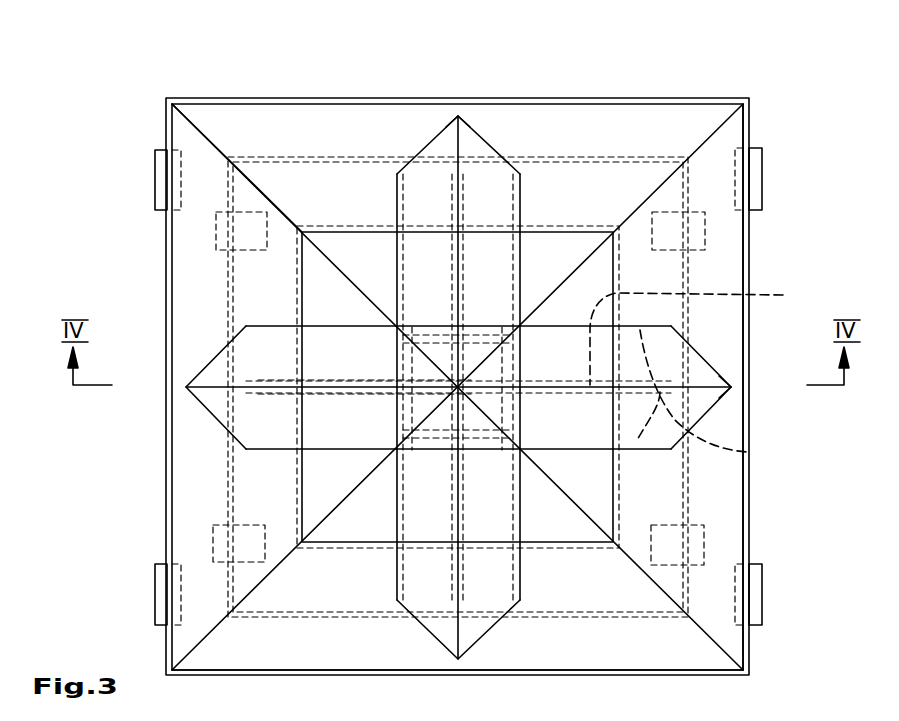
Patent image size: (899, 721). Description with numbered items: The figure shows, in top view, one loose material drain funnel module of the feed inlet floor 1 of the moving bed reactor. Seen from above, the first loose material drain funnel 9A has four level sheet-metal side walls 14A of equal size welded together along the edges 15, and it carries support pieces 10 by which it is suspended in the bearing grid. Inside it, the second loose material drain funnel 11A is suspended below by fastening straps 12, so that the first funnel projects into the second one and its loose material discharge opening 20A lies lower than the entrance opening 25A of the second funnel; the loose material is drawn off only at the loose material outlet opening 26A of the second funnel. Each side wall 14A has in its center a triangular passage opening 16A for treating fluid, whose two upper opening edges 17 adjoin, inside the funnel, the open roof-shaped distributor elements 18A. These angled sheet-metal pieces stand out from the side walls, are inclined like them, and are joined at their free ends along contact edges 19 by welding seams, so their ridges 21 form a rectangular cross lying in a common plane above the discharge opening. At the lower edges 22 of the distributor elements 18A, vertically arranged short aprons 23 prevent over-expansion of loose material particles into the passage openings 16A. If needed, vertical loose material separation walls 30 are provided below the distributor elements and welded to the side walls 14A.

The feed inlet floor 1 is at (838, 720).
The first loose material drain funnel 9A is at (749, 237).
The support pieces 10 is at (160, 193).
The second loose material drain funnel 11A is at (643, 157).
The fastening straps 12 is at (697, 233).
The side wall 14A is at (197, 165).
The edges 15 is at (723, 128).
The triangular passage opening 16A is at (473, 147).
The upper opening edges 17 is at (457, 695).
The distributor elements 18A is at (425, 205).
The contact edges 19 is at (478, 128).
The loose material discharge opening 20A is at (545, 260).
The ridges 21 is at (460, 202).
The lower edges 22 is at (520, 520).
The aprons 23 is at (665, 425).
The entrance opening 25A is at (663, 160).
The loose material outlet opening 26A is at (427, 371).
The loose material separation walls 30 is at (700, 334).